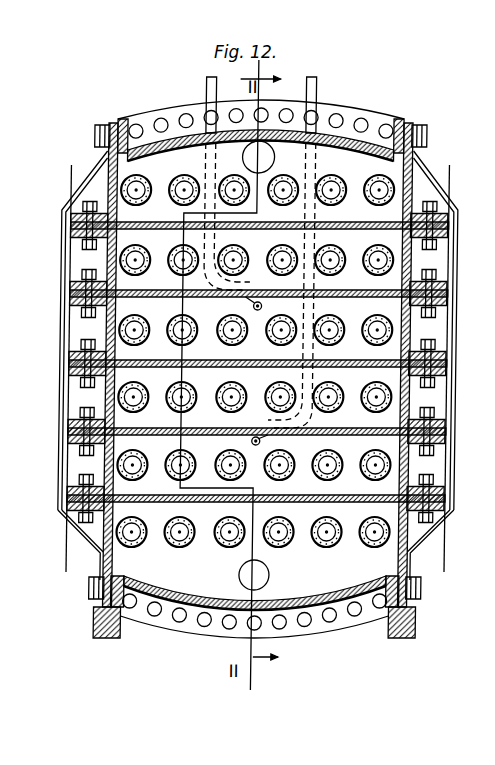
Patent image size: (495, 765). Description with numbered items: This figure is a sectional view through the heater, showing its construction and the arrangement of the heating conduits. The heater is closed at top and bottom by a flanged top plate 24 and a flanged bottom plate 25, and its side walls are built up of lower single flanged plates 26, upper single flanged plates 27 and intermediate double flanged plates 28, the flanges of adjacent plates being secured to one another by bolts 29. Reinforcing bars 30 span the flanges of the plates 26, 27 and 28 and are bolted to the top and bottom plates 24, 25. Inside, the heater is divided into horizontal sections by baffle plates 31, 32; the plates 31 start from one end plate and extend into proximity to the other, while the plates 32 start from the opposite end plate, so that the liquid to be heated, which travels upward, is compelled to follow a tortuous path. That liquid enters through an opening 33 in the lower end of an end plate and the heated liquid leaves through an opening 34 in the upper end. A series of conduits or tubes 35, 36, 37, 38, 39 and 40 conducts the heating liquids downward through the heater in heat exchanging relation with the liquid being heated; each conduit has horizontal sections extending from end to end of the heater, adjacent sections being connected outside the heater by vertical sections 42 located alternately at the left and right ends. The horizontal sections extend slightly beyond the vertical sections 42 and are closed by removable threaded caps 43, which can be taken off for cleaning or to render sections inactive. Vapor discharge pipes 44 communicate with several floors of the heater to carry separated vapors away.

The flanged top plate 24 is at (157, 143).
The flanged bottom plate 25 is at (159, 585).
The lower single flanged plate 26 is at (107, 532).
The upper single flanged plate 27 is at (107, 180).
The intermediate double flanged plate 28 is at (110, 249).
The bolt 29 is at (92, 344).
The reinforcing bar 30 is at (71, 398).
The baffle plate 31 is at (174, 221).
The baffle plate 32 is at (174, 289).
The opening 33 is at (274, 580).
The opening 34 is at (262, 145).
The conduit 35 is at (140, 177).
The conduit 36 is at (184, 176).
The conduit 37 is at (234, 176).
The conduit 38 is at (281, 176).
The conduit 39 is at (330, 176).
The conduit 40 is at (377, 177).
The vertical section 42 is at (3, 433).
The removable threaded cap 43 is at (0, 362).
The vapor discharge pipe 44 is at (207, 92).